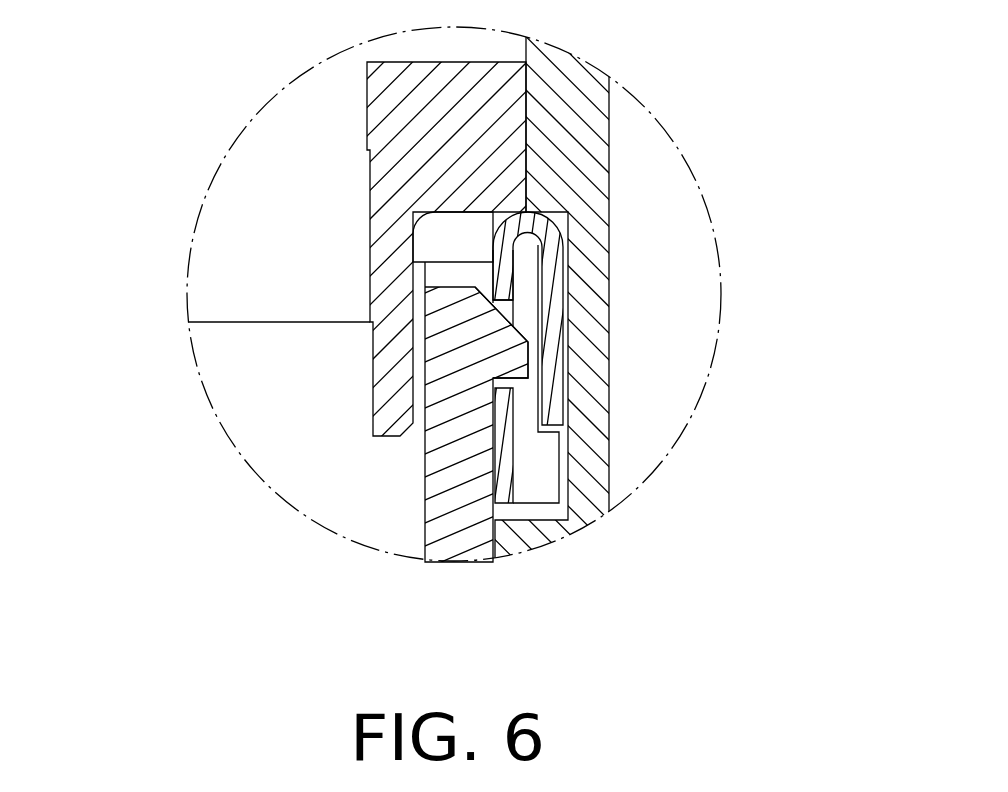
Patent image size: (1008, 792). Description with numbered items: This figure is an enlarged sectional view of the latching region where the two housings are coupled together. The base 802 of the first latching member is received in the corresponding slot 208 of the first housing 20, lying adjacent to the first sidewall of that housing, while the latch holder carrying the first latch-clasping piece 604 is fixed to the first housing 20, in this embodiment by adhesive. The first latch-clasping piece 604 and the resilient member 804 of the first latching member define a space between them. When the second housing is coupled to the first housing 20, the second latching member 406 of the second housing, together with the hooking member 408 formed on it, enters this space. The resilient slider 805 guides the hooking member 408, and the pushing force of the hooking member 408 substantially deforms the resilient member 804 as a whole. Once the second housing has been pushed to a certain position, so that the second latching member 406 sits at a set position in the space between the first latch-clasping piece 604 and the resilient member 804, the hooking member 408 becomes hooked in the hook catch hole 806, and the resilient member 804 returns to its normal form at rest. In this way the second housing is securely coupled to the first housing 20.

The first housing 20 is at (572, 90).
The slot 208 is at (560, 492).
The second latching member 406 is at (450, 532).
The hooking member 408 is at (507, 358).
The first latch-clasping piece 604 is at (387, 380).
The base 802 is at (553, 244).
The resilient member 804 is at (505, 271).
The resilient slider 805 is at (505, 448).
The hook catch hole 806 is at (505, 310).